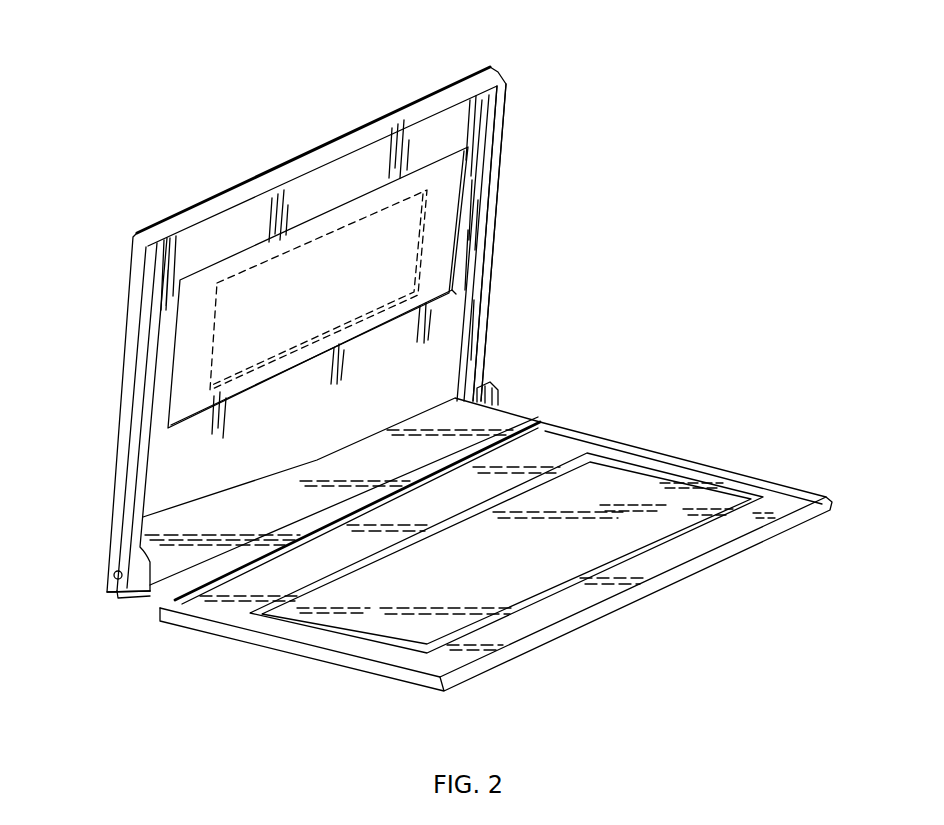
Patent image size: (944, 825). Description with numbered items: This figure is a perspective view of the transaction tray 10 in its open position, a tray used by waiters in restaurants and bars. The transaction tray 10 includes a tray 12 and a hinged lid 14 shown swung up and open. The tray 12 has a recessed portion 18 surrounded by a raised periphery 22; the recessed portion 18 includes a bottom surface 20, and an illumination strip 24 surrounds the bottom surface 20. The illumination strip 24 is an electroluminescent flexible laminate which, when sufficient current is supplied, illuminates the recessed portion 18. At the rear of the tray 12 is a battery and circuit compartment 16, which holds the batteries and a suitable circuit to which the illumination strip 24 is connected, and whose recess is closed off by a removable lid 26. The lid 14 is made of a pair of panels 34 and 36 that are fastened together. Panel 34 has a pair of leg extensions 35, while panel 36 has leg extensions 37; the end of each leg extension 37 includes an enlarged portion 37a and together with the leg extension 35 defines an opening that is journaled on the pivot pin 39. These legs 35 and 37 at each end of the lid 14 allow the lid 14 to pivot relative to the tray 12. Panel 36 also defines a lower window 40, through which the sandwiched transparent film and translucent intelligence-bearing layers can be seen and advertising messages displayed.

The transaction tray 10 is at (441, 379).
The tray 12 is at (688, 453).
The hinged lid 14 is at (496, 206).
The battery and circuit compartment 16 is at (318, 461).
The recessed portion 18 is at (698, 504).
The bottom surface 20 is at (653, 522).
The raised periphery 22 is at (571, 601).
The illumination strip 24 is at (628, 466).
The removable lid 26 is at (370, 467).
The panel 34 is at (329, 145).
The leg extensions 35 is at (120, 508).
The panel 36 is at (493, 170).
The leg extensions 37 is at (145, 518).
The enlarged portion 37a is at (128, 597).
The pivot pin 39 is at (113, 575).
The lower window 40 is at (447, 266).